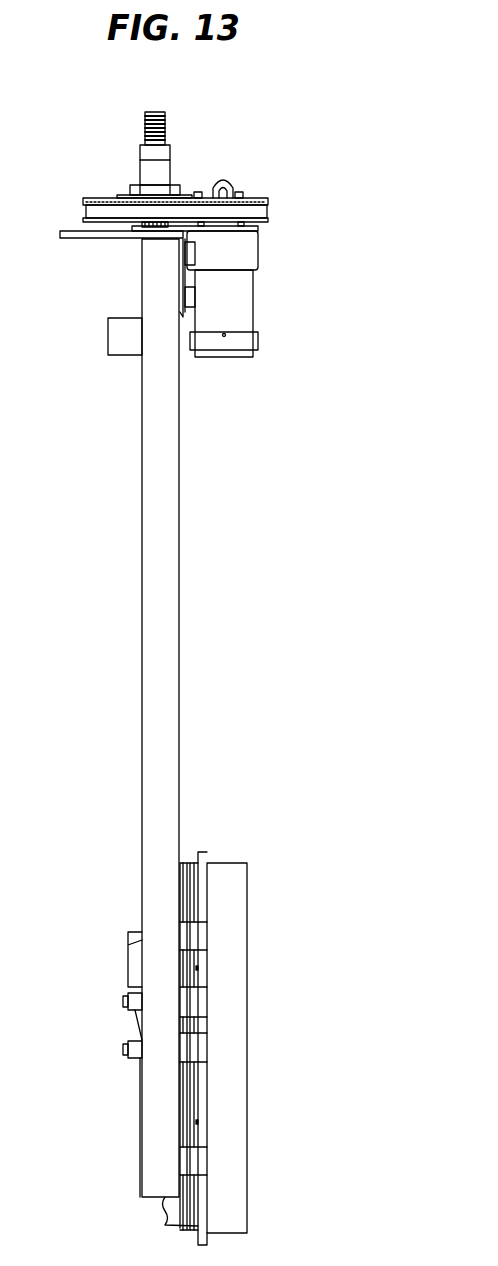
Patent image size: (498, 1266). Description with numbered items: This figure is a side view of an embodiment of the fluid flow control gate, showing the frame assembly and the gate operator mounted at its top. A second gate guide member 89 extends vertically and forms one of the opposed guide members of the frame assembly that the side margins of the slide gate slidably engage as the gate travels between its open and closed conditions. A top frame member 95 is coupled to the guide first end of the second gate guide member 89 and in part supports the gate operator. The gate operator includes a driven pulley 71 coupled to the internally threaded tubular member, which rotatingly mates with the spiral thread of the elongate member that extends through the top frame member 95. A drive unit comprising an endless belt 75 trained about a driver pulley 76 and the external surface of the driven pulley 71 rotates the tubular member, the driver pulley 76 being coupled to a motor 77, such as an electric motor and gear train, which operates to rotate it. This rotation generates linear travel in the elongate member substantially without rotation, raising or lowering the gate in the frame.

The driven pulley 71 is at (103, 198).
The driver pulley 76 is at (258, 190).
The endless belt 75 is at (262, 208).
The motor 77 is at (235, 298).
The top frame member 95 is at (82, 239).
The second gate guide member 89 is at (165, 485).